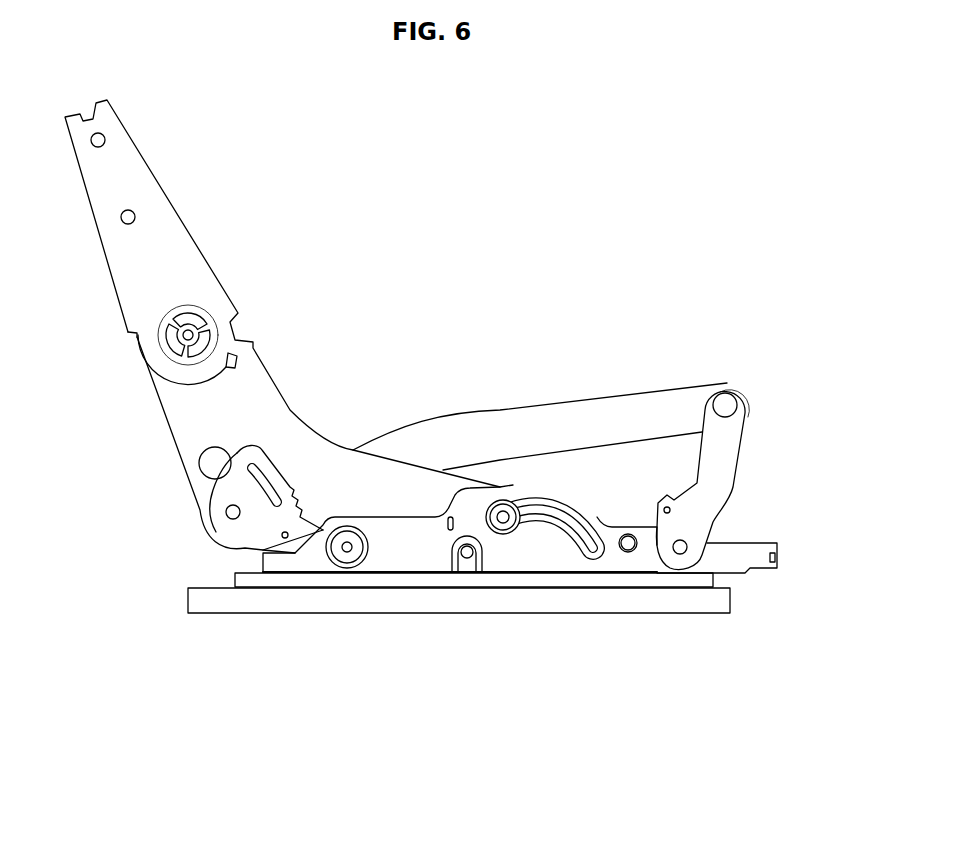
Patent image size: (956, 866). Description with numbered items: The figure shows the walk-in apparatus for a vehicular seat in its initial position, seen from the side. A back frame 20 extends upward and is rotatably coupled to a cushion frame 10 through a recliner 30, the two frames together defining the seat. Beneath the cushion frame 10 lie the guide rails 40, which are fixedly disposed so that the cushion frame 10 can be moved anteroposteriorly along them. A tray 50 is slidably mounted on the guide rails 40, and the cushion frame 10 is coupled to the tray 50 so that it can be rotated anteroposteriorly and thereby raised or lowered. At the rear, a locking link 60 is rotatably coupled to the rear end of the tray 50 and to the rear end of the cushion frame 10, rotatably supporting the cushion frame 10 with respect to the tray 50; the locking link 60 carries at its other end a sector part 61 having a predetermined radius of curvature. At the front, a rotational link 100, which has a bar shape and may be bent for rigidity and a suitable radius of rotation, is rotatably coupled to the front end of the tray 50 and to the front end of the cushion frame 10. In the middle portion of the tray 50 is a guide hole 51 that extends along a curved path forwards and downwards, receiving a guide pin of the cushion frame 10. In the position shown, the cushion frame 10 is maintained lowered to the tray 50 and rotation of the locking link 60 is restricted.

The cushion frame 10 is at (378, 480).
The back frame 20 is at (155, 237).
The recliner 30 is at (175, 330).
The guide rails 40 is at (343, 582).
The tray 50 is at (412, 555).
The guide hole 51 is at (553, 520).
The locking link 60 is at (200, 520).
The sector part 61 is at (263, 460).
The rotational link 100 is at (725, 463).